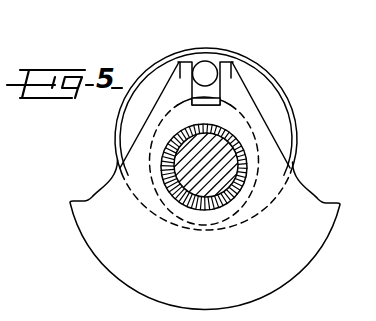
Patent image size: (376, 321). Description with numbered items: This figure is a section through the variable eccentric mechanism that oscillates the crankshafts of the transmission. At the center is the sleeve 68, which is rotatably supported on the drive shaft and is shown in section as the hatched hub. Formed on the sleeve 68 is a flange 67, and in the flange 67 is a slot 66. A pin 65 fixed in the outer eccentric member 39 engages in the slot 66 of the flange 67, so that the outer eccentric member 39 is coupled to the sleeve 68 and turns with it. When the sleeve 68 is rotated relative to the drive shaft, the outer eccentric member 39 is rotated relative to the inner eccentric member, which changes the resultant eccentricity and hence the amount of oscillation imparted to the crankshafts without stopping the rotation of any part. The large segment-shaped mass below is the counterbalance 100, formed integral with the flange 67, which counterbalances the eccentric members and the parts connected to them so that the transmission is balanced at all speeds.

The outer eccentric member 39 is at (262, 97).
The pin 65 is at (209, 62).
The slot 66 is at (207, 91).
The flange 67 is at (181, 62).
The sleeve 68 is at (237, 158).
The counterbalance 100 is at (142, 277).